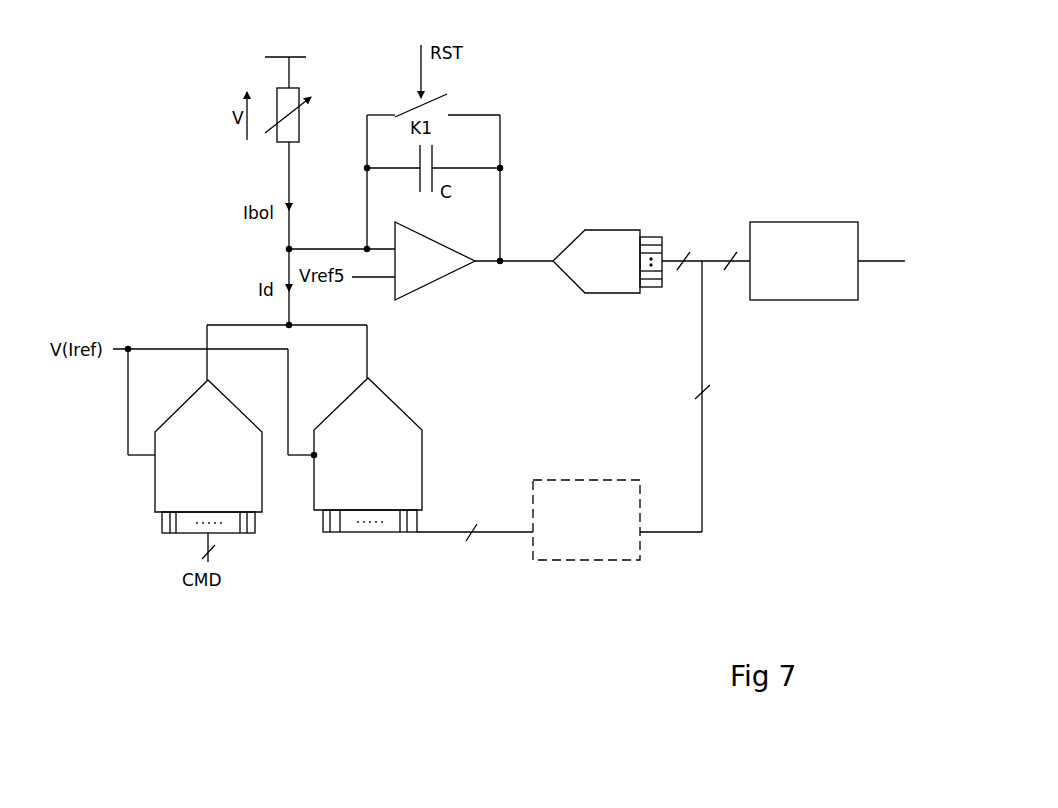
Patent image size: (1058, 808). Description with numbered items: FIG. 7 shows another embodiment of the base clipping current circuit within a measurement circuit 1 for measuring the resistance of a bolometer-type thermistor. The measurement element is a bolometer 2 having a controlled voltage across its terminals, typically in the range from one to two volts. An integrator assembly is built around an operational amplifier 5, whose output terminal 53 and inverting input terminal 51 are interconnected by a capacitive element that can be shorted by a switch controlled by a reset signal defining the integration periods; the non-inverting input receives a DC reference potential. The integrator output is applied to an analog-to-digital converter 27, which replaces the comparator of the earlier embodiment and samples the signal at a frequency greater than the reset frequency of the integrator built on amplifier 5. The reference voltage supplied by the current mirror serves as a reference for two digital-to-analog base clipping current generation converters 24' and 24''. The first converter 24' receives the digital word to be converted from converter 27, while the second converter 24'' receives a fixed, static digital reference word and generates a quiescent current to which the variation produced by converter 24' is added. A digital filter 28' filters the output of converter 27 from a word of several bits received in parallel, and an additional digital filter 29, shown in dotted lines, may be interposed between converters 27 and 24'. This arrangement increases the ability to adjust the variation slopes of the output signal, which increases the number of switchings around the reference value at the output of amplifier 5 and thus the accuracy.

The measurement circuit 1 is at (613, 139).
The bolometer 2 is at (300, 128).
The operational amplifier 5 is at (438, 293).
The inverting input terminal 51 is at (366, 245).
The output terminal 53 is at (502, 257).
The analog-to-digital converter 27 is at (610, 230).
The digital filter 28' is at (804, 289).
The additional digital filter 29 is at (571, 480).
The first digital-to-analog base clipping current generation converter 24' is at (404, 455).
The second digital-to-analog base clipping current generation converter 24'' is at (235, 487).